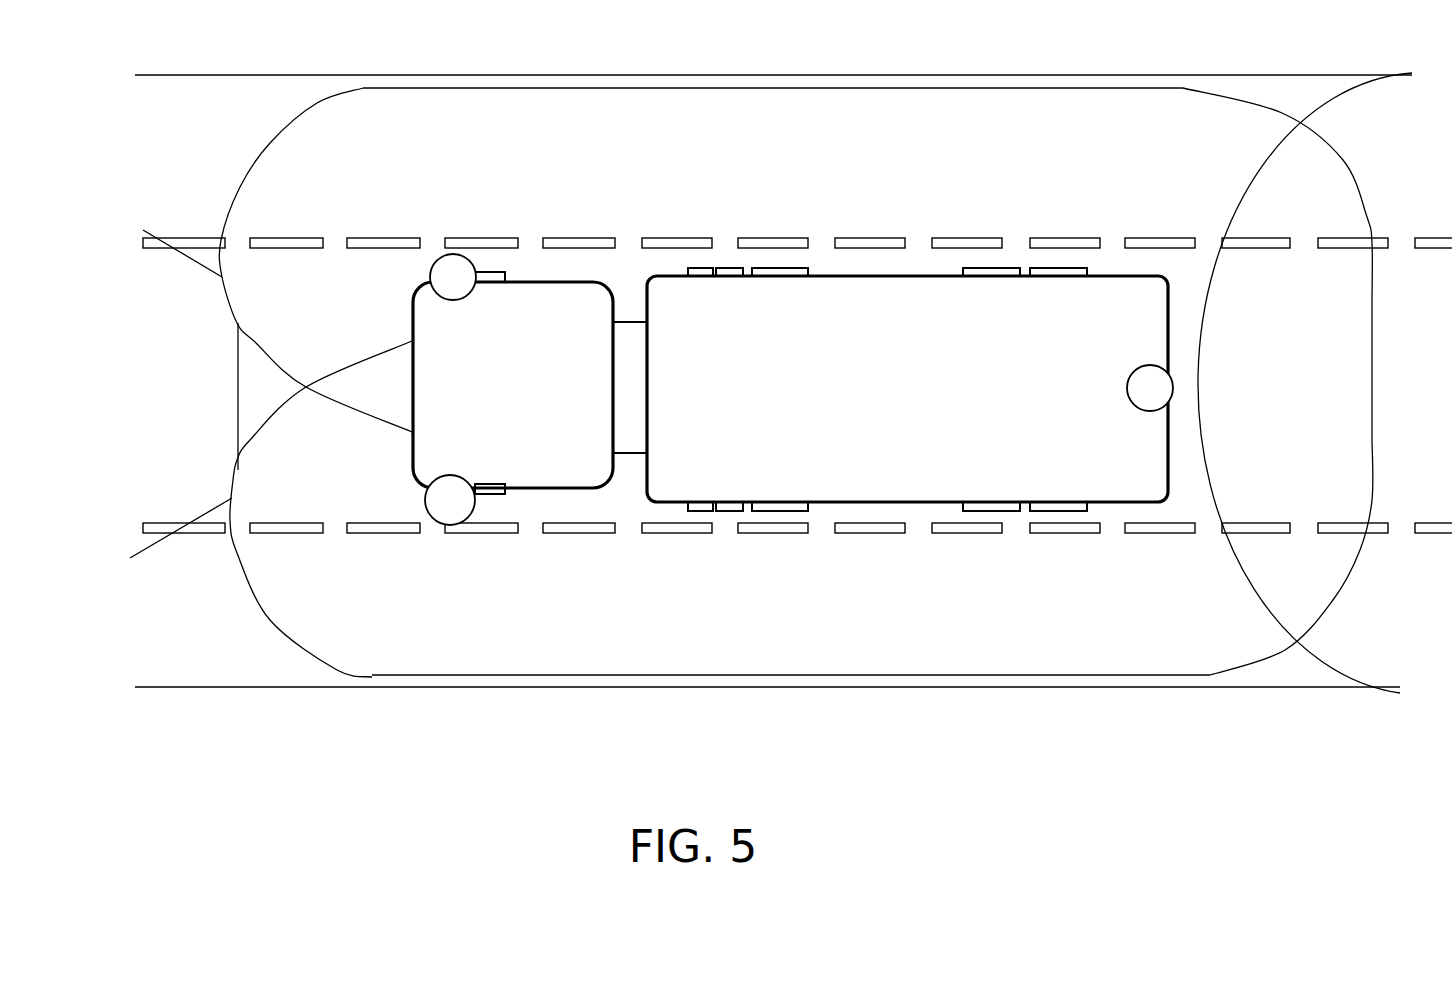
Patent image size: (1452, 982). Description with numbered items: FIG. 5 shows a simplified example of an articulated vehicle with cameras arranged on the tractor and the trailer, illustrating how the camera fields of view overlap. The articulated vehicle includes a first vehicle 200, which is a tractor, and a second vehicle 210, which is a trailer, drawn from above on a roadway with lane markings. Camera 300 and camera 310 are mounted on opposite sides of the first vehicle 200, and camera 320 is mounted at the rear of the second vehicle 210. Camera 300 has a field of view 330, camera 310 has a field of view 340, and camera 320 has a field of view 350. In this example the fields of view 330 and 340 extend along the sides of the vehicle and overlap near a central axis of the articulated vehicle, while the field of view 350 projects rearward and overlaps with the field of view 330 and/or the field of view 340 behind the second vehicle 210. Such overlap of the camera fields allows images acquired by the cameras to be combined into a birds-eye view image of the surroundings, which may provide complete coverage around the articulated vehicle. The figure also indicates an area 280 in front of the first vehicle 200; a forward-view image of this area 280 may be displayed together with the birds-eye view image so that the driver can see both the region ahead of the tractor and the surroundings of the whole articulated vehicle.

The first vehicle 200 is at (557, 282).
The second vehicle 210 is at (914, 272).
The area in front of the first vehicle 280 is at (195, 396).
The camera 300 is at (447, 254).
The camera 310 is at (443, 525).
The camera 320 is at (1173, 388).
The field of view 330 is at (833, 112).
The field of view 340 is at (842, 652).
The field of view 350 is at (1343, 645).